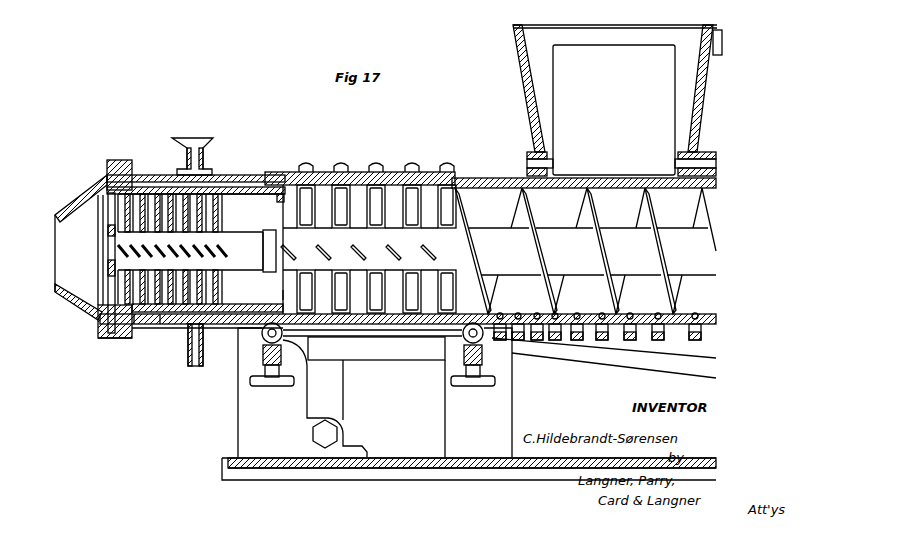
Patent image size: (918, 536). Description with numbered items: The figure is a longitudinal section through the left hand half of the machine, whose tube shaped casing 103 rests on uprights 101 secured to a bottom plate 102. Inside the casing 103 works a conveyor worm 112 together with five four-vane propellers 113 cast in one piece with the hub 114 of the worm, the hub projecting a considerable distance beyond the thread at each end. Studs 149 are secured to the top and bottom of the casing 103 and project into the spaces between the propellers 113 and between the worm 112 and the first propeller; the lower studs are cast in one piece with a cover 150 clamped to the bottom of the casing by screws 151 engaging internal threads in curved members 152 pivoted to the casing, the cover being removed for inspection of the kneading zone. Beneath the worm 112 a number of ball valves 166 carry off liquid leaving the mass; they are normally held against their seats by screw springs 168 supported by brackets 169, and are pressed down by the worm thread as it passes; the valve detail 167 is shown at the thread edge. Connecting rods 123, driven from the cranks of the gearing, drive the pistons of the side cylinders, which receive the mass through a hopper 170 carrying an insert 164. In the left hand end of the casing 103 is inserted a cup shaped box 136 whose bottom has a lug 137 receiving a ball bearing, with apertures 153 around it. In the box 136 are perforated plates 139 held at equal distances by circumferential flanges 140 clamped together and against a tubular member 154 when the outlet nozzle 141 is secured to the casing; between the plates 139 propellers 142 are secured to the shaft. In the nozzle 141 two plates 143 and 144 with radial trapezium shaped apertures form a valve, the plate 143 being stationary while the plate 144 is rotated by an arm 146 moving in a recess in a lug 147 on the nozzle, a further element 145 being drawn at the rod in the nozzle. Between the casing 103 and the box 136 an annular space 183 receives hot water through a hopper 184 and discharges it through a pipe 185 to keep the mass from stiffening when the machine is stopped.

The uprights 101 is at (375, 392).
The bottom plate 102 is at (386, 467).
The tube shaped casing 103 is at (222, 178).
The conveyor worm 112 is at (563, 285).
The four-vane propellers 113 is at (410, 198).
The hub 114 is at (369, 286).
The connecting rods 123 is at (648, 372).
The cup shaped member or box 136 is at (240, 189).
The lug 137 is at (264, 232).
The perforated plates 139 is at (142, 320).
The circumferential flanges 140 is at (166, 320).
The outlet nozzle 141 is at (82, 196).
The propellers 142 is at (160, 202).
The stationary plate 143 is at (108, 232).
The adjustable plate 144 is at (108, 240).
The rod collar 145 is at (108, 270).
The arm 146 is at (96, 330).
The lug 147 is at (100, 318).
The studs 149 is at (308, 198).
The cover 150 is at (376, 348).
The screws 151 is at (280, 386).
The curved members 152 is at (263, 345).
The apertures 153 is at (278, 286).
The tubular member 154 is at (235, 196).
The hopper insert 164 is at (614, 110).
The ball valves 166 is at (644, 290).
The screw flight edge 167 is at (647, 308).
The screw springs 168 is at (604, 353).
The brackets 169 is at (662, 332).
The hopper 170 is at (652, 30).
The annular space 183 is at (270, 181).
The hopper 184 is at (191, 145).
The pipe 185 is at (184, 357).